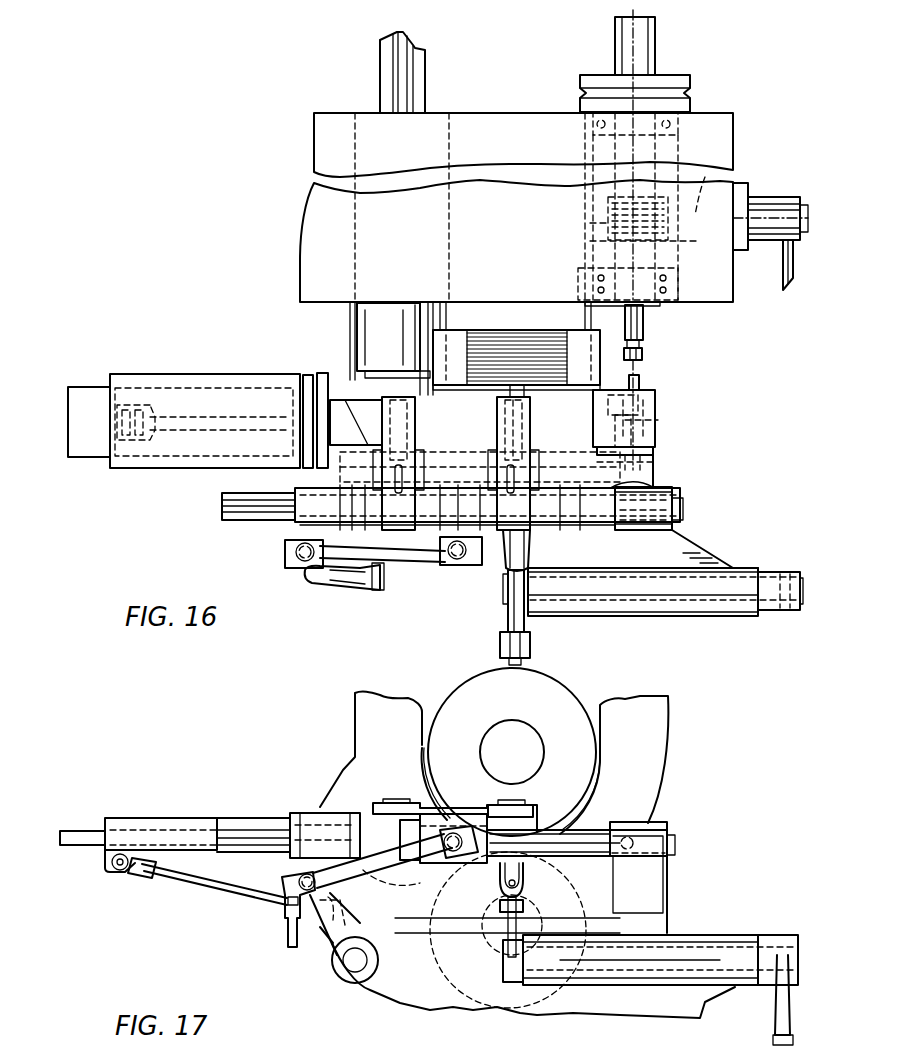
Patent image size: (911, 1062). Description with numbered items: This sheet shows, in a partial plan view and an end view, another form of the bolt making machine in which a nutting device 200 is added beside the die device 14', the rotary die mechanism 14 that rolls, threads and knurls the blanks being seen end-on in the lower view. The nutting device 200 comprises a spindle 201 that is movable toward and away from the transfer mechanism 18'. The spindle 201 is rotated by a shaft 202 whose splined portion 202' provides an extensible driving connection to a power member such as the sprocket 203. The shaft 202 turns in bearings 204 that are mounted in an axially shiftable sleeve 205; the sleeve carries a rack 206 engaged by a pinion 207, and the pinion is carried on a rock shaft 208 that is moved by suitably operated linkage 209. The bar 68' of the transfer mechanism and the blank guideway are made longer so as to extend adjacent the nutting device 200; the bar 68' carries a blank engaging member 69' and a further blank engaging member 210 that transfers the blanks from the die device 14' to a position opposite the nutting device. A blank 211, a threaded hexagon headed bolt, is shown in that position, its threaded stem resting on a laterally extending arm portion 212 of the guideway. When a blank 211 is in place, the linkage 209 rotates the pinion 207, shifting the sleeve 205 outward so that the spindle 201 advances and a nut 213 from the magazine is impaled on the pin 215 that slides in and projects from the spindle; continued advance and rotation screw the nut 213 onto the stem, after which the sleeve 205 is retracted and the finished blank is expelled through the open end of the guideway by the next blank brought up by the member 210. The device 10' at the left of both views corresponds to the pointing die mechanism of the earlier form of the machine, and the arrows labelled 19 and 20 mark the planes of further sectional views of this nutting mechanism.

In FIG. 16, the rotary die mechanism 14 is at (516, 359).
In FIG. 17, the rotary die mechanism 14 is at (512, 752).
In FIG. 16, the die device 14' is at (516, 359).
In FIG. 16, the hydraulic cylinder 10' is at (250, 385).
In FIG. 17, the hydraulic cylinder 10' is at (215, 825).
In FIG. 16, the transfer mechanism 18' is at (451, 466).
In FIG. 17, the transfer mechanism 18' is at (453, 795).
In FIG. 16, the section line 19 is at (648, 8).
In FIG. 16, the section line 20 is at (378, 395).
In FIG. 16, the bar of the transfer mechanism 68' is at (653, 480).
In FIG. 17, the bar of the transfer mechanism 68' is at (581, 858).
In FIG. 16, the blank engaging member 69' is at (456, 457).
In FIG. 17, the blank engaging member 69' is at (455, 821).
In FIG. 16, the nutting device 200 is at (645, 326).
In FIG. 16, the spindle 201 is at (642, 344).
In FIG. 16, the shaft 202 is at (677, 155).
In FIG. 16, the splined portion 202' is at (677, 155).
In FIG. 16, the sprocket 203 is at (676, 80).
In FIG. 16, the bearings 204 is at (640, 147).
In FIG. 16, the axially shiftable sleeve 205 is at (705, 177).
In FIG. 16, the rack 206 is at (600, 241).
In FIG. 16, the pinion 207 is at (604, 219).
In FIG. 16, the rock shaft 208 is at (712, 217).
In FIG. 16, the linkage 209 is at (780, 280).
In FIG. 16, the blank engaging member 210 is at (528, 427).
In FIG. 17, the blank engaging member 210 is at (525, 807).
In FIG. 16, the blank 211 is at (658, 420).
In FIG. 16, the laterally extending arm portion 212 is at (655, 395).
In FIG. 16, the nut 213 is at (640, 380).
In FIG. 16, the pin 215 is at (643, 354).